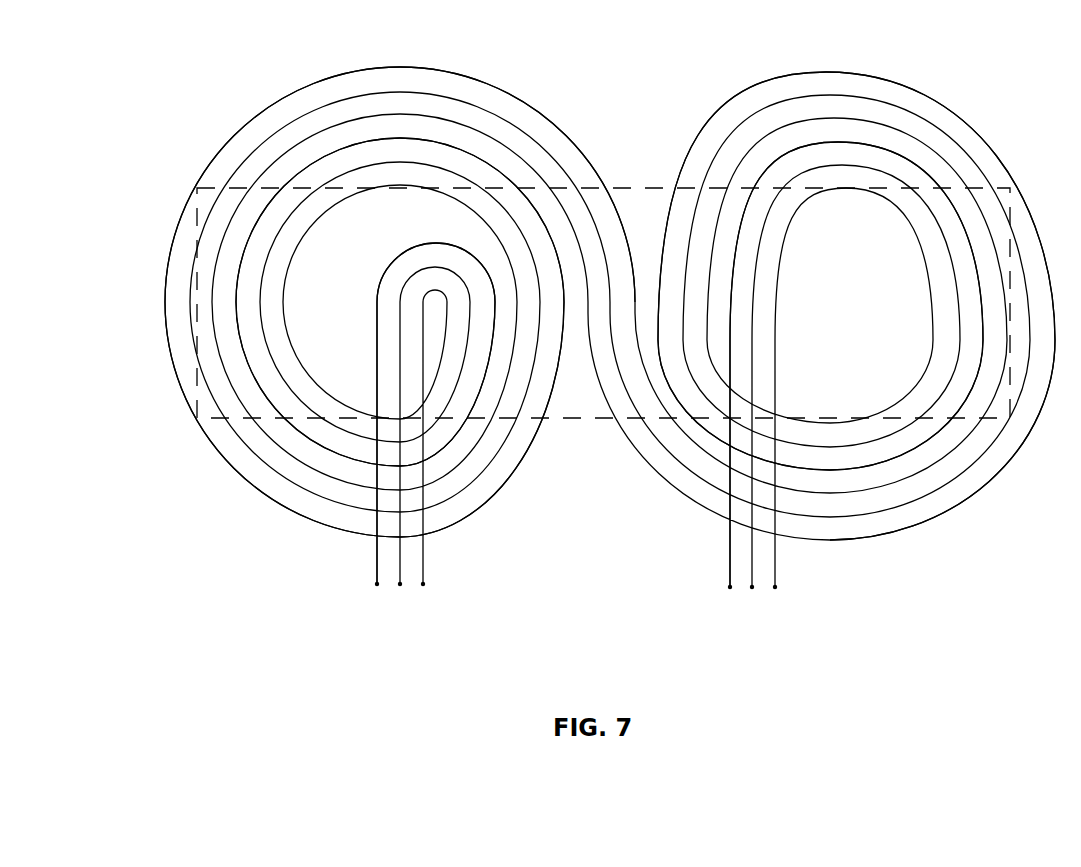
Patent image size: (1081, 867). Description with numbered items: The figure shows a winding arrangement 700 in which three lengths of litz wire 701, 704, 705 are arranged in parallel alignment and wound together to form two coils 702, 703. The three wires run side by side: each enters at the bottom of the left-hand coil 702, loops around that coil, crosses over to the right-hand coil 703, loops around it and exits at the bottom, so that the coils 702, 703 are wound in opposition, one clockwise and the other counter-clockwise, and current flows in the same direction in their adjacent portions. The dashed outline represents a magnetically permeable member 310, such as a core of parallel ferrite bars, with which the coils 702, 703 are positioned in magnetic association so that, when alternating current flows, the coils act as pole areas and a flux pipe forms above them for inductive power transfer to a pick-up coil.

The winding arrangement 700 is at (172, 99).
The length of litz wire 701 is at (470, 74).
The coil 702 is at (402, 233).
The coil 703 is at (866, 250).
The length of litz wire 704 is at (527, 131).
The length of litz wire 705 is at (558, 196).
The magnetically permeable member 310 is at (1011, 405).